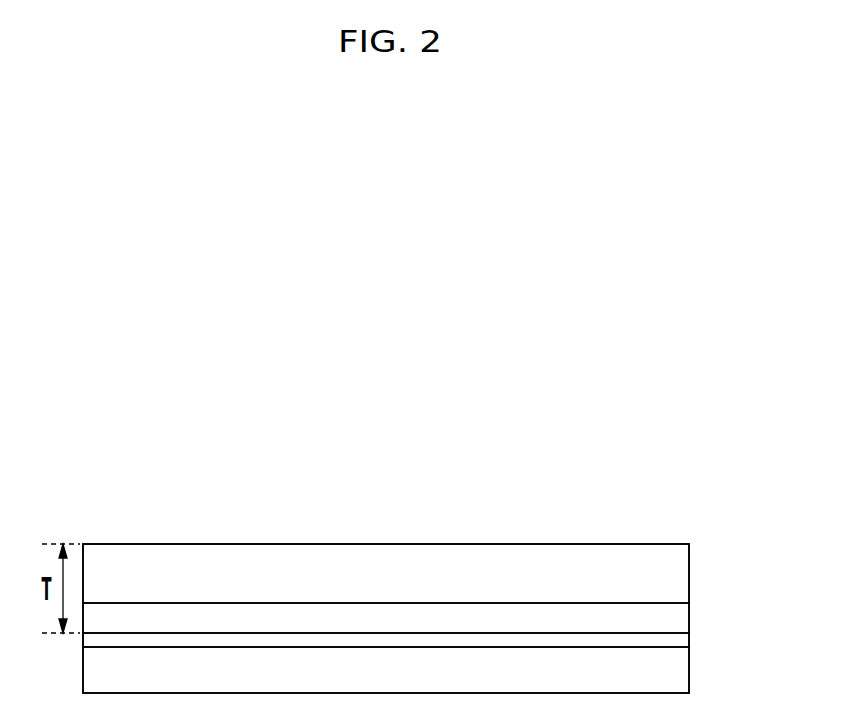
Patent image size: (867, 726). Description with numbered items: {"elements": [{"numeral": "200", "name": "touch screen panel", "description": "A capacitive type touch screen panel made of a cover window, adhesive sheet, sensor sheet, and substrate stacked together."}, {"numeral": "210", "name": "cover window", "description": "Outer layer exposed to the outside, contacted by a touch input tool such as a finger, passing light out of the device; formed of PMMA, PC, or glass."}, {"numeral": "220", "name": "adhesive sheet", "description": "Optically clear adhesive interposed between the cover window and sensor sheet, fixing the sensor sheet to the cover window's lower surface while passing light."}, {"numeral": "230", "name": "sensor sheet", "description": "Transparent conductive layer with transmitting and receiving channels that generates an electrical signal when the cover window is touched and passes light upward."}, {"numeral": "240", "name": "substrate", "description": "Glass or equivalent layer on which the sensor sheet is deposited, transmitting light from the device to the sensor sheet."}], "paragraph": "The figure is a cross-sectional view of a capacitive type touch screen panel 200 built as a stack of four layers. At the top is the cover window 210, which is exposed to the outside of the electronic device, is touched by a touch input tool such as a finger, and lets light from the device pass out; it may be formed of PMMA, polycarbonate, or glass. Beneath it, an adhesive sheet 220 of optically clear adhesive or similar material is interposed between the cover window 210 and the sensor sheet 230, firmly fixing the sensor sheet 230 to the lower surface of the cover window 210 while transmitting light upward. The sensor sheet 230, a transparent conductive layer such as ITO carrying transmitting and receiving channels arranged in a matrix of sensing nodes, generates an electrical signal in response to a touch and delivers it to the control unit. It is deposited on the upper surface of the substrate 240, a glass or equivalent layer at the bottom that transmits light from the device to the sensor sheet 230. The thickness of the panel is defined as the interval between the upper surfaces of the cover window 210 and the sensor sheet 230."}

The laminated structure 200 is at (667, 505).
The first layer 210 is at (689, 577).
The second layer 220 is at (689, 617).
The third layer 230 is at (689, 641).
The fourth layer 240 is at (689, 672).